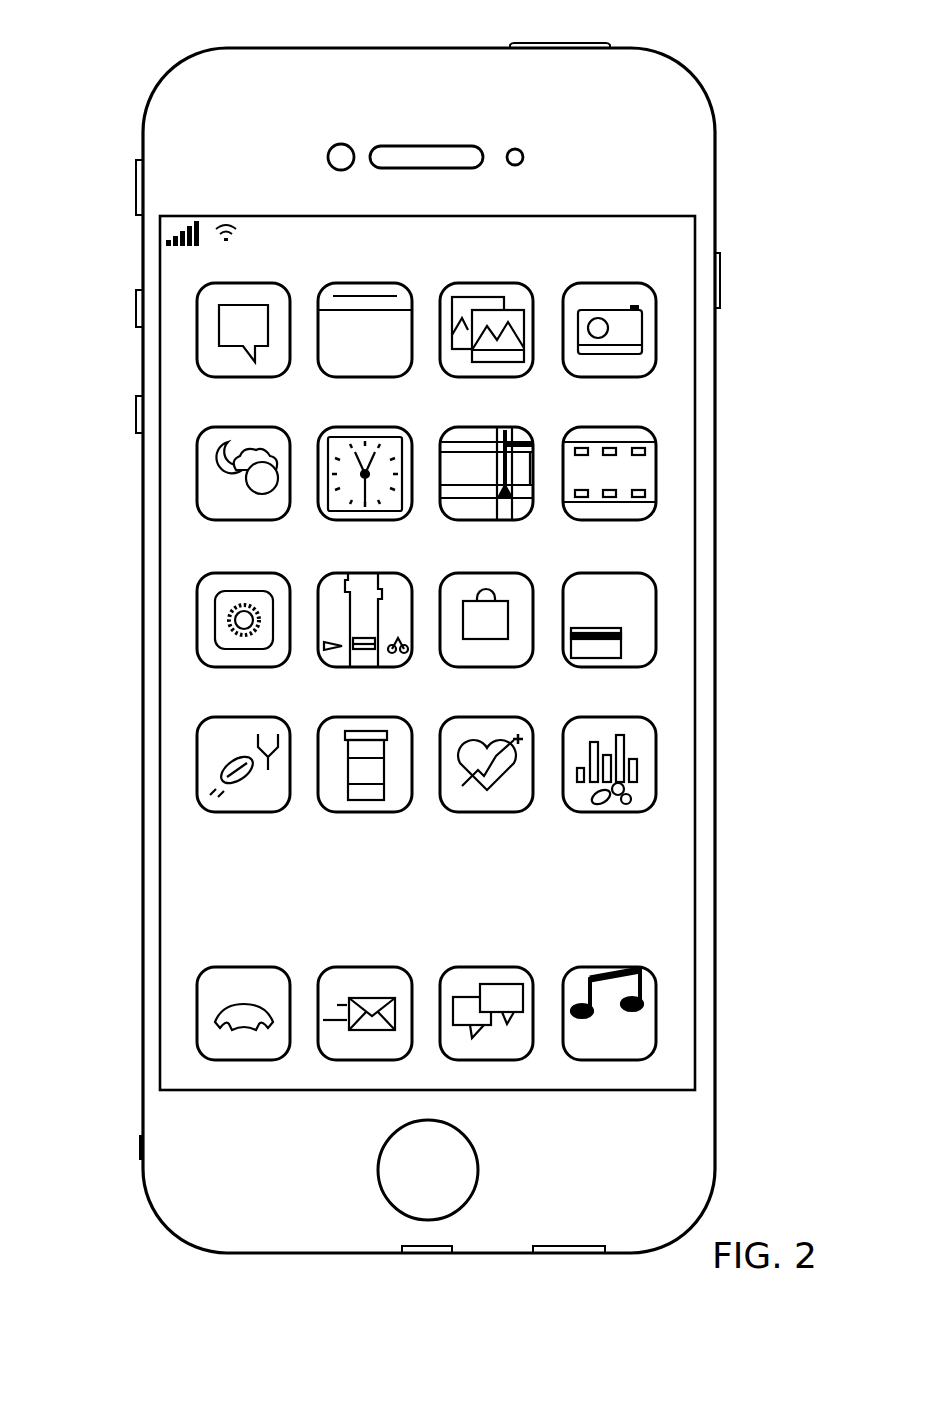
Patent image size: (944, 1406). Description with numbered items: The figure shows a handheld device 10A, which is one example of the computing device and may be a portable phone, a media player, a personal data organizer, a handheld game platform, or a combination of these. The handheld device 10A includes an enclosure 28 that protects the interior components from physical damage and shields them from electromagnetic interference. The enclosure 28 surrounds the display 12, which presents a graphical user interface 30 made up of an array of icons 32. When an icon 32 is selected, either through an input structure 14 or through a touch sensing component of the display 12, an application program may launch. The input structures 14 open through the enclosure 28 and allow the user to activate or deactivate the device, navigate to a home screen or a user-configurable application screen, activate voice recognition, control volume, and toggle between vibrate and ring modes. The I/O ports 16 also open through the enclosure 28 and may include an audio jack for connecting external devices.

The handheld device 10A is at (148, 28).
The display 12 is at (696, 580).
The input structures 14 is at (578, 42).
The I/O ports 16 is at (230, 1255).
The enclosure 28 is at (716, 166).
The graphical user interface 30 is at (673, 374).
The icon 32 is at (481, 718).